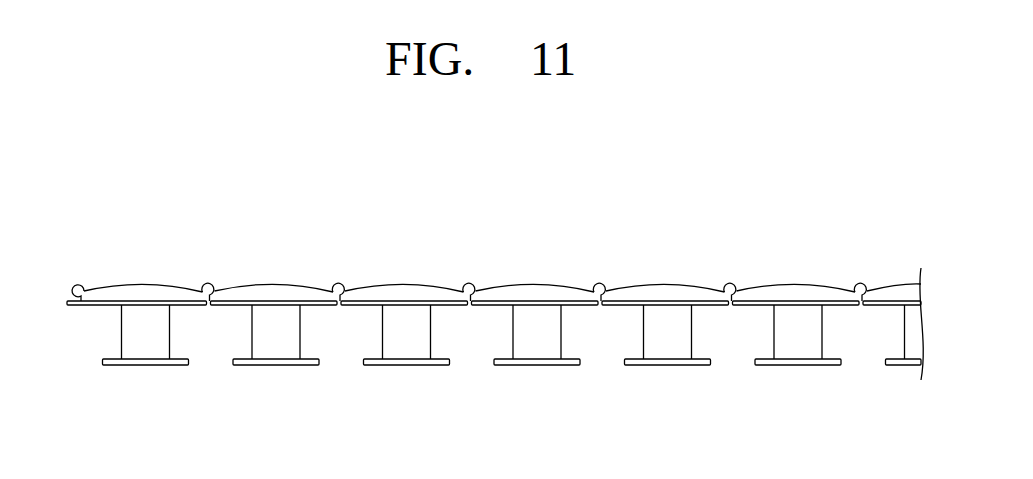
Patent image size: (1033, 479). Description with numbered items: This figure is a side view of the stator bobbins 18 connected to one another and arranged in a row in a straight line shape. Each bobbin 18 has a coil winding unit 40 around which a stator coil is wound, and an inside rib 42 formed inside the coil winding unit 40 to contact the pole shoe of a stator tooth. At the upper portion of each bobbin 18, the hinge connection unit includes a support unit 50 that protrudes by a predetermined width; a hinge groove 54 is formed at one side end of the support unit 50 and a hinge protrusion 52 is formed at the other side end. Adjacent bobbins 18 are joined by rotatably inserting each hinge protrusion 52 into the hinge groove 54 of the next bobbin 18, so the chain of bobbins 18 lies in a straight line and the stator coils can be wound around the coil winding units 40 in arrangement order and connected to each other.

The bobbin 18 is at (551, 238).
The coil winding unit 40 is at (163, 333).
The inside rib 42 is at (133, 365).
The support unit 50 is at (141, 292).
The hinge protrusion 52 is at (203, 284).
The hinge groove 54 is at (76, 283).